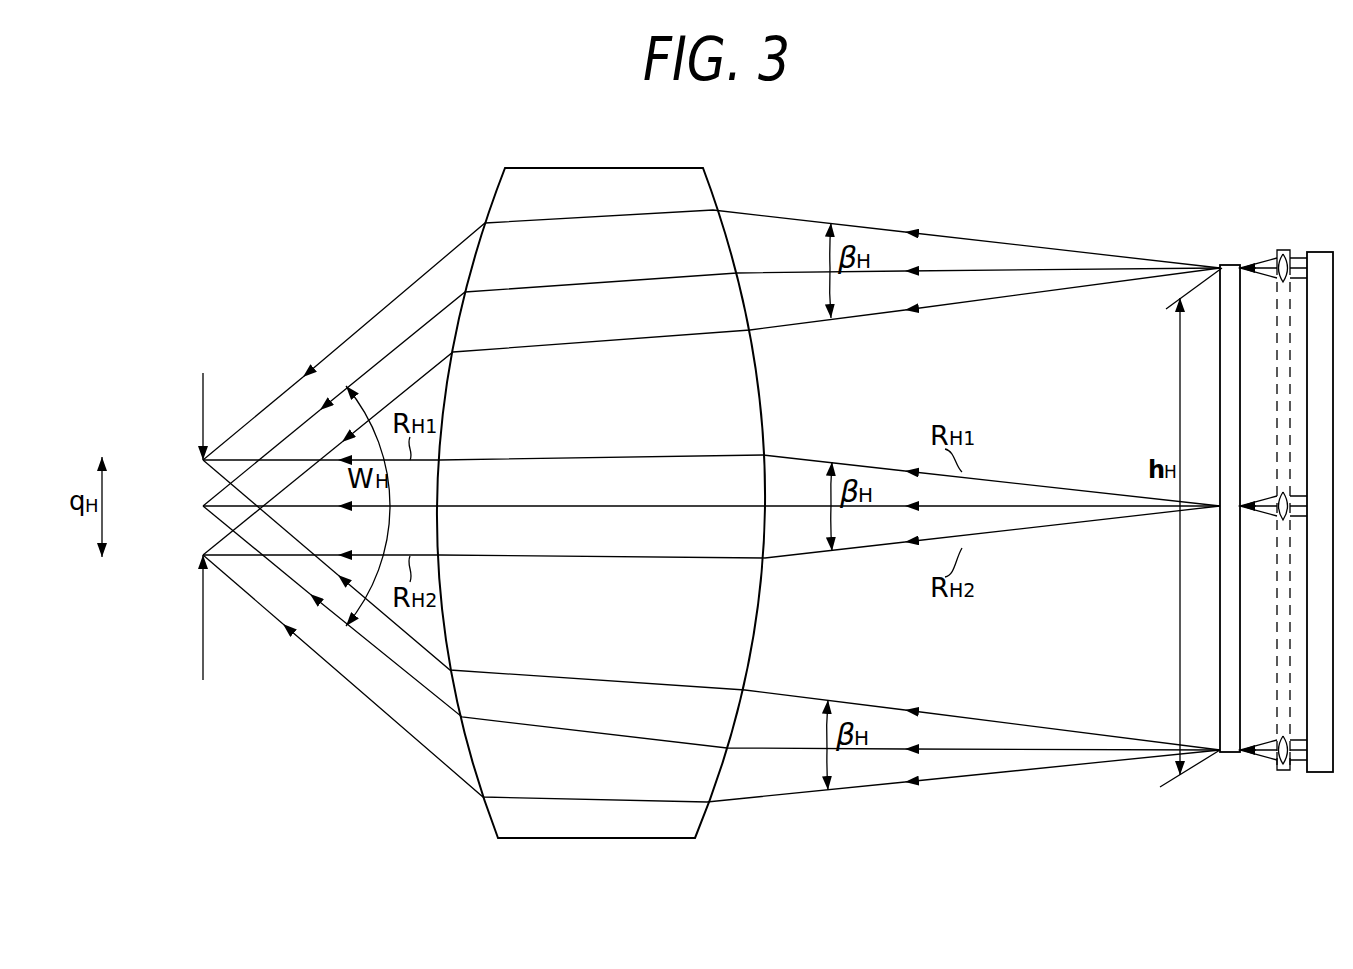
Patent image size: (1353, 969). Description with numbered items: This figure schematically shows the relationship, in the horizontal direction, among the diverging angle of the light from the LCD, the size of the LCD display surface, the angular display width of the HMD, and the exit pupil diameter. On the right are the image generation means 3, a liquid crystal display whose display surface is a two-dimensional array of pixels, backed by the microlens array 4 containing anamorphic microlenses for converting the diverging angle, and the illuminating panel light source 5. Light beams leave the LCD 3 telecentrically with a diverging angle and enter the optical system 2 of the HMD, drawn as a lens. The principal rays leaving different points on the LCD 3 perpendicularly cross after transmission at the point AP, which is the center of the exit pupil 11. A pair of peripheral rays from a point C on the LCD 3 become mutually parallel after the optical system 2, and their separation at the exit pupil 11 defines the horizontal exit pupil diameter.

The optical system 2 is at (658, 826).
The image generation means 3 is at (1228, 740).
The microlens array 4 is at (1283, 775).
The illuminating panel light source 5 is at (1318, 775).
The exit pupil 11 is at (201, 391).
The crossing point of the principal rays AP is at (203, 507).
The point on the LCD C is at (1220, 507).